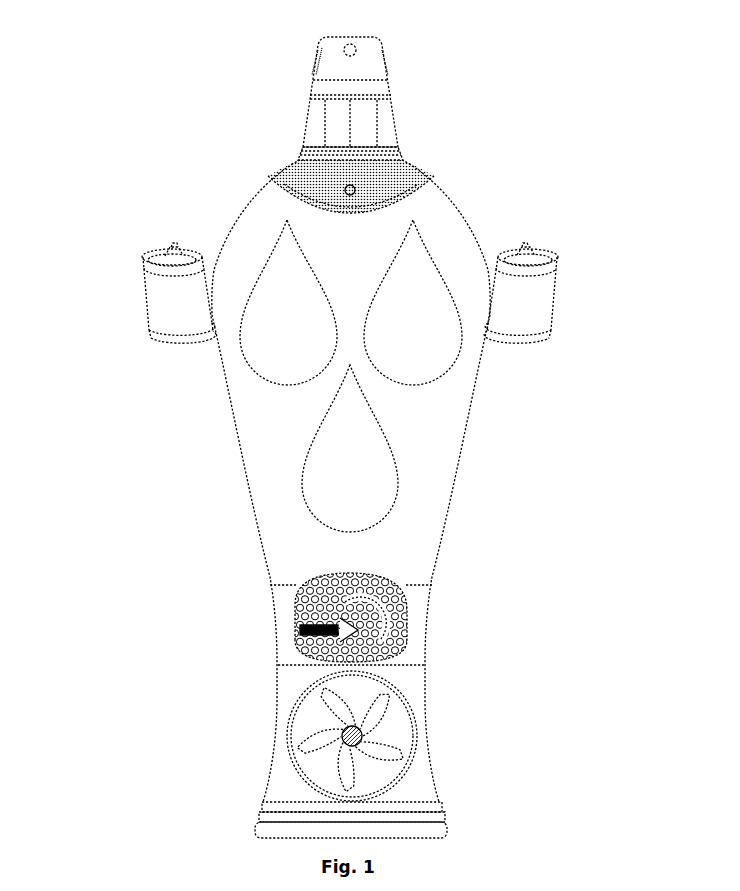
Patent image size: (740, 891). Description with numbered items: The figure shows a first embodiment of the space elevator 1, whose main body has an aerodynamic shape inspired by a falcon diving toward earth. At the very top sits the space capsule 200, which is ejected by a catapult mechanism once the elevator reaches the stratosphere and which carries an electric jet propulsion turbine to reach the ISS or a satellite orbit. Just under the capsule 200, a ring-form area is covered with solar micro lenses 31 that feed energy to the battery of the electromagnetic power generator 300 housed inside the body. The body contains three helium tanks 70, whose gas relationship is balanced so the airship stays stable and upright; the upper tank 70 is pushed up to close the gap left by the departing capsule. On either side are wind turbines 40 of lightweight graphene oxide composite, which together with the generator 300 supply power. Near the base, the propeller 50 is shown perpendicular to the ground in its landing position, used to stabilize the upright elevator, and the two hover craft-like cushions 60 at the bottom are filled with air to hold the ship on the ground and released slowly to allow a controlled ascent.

The air freshener device 1 is at (402, 58).
The space capsule 200 is at (318, 69).
The hover craft-like cushions 60 is at (353, 147).
The solar micro lenses 31 is at (346, 186).
The helium tanks 70 is at (300, 285).
The wind turbines 40 is at (182, 295).
The electromagnetic power generator 300 is at (362, 625).
The propeller 50 is at (363, 777).